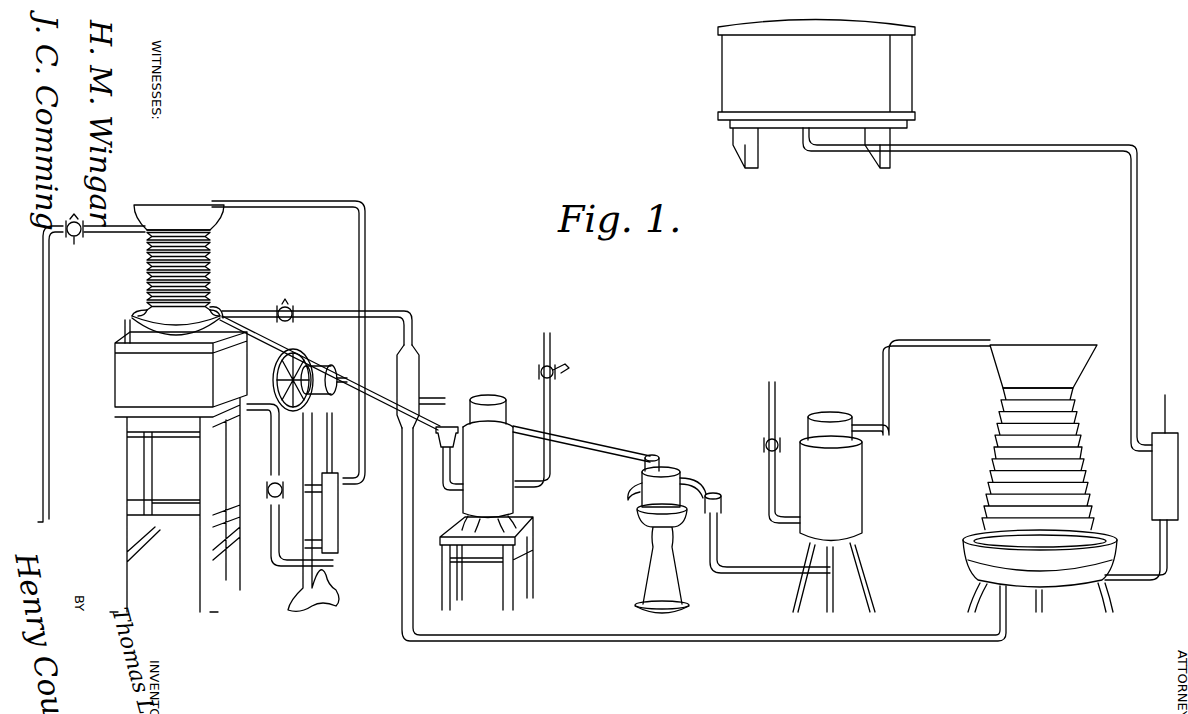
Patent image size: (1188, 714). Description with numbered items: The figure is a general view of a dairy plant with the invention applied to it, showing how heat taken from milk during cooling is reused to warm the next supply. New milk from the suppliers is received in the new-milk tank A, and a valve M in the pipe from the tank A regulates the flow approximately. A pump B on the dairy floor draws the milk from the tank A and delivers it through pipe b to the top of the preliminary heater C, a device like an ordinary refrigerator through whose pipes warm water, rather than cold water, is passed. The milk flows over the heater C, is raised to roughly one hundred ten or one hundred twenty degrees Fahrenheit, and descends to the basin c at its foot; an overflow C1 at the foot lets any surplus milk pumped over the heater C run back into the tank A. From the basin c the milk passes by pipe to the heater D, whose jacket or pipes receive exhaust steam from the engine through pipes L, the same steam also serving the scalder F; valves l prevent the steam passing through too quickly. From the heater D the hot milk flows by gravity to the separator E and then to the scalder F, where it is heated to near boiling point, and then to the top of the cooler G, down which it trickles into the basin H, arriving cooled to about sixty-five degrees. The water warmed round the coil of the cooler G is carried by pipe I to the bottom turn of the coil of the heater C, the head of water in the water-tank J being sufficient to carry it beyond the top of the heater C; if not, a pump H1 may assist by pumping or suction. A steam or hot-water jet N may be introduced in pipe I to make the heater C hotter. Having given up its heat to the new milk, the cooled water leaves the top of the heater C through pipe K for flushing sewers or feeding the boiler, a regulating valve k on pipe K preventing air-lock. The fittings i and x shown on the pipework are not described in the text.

The new-milk tank A is at (178, 472).
The pump B is at (338, 512).
The preliminary heater C is at (211, 286).
The basin c is at (140, 311).
The overflow C1 is at (128, 326).
The heater D is at (486, 502).
The separator E is at (729, 534).
The scalder F is at (891, 476).
The cooler G is at (1084, 464).
The basin H is at (1040, 571).
The pump H1 is at (1152, 488).
The pipe I is at (416, 326).
The water-tank J is at (935, 236).
The pipe K is at (66, 282).
The regulating-valve k is at (78, 240).
The pipes L is at (552, 407).
The valves l is at (540, 372).
The valve M is at (268, 492).
The steam or hot-water pipe or jet N is at (420, 392).
The pipe b is at (367, 264).
The valve i is at (281, 306).
The pipe x is at (336, 314).